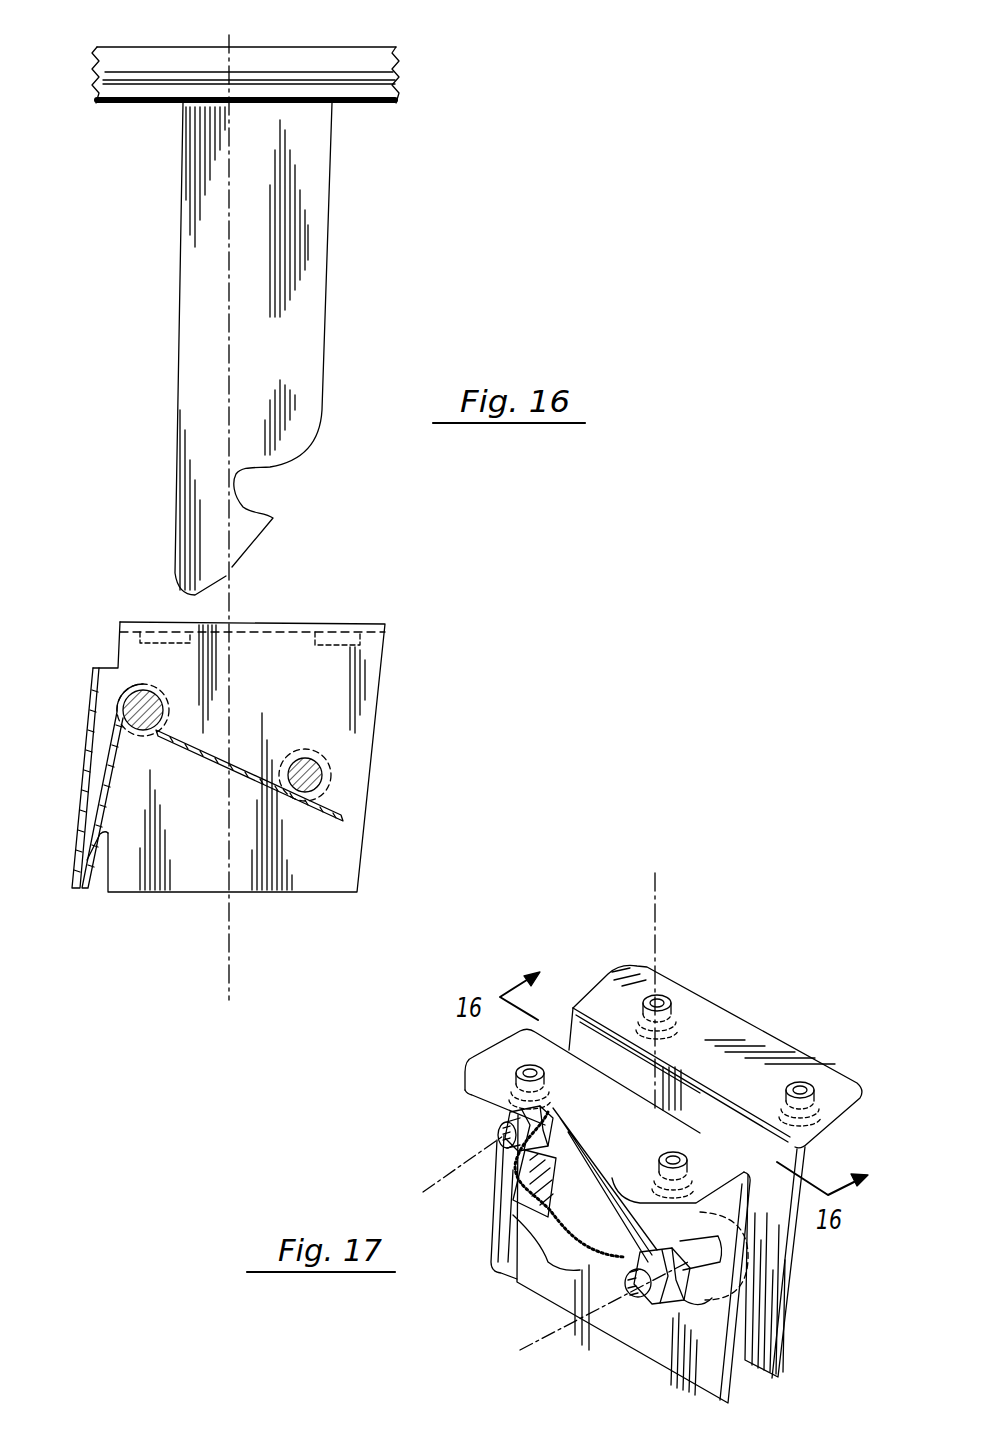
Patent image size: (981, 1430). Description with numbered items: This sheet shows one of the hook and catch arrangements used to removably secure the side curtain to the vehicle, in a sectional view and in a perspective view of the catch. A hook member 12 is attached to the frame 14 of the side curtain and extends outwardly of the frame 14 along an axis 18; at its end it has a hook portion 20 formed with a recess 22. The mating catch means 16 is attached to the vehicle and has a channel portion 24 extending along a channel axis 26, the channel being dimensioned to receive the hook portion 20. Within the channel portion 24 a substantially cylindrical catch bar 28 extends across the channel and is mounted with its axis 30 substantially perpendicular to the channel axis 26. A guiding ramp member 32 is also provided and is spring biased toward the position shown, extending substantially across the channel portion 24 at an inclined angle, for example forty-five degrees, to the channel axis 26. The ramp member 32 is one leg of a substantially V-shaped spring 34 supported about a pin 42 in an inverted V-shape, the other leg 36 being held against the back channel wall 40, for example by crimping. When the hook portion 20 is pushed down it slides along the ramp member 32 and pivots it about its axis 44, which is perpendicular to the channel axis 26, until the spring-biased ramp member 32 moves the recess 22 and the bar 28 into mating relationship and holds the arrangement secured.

In FIG. 16, the hook member 12 is at (370, 213).
In FIG. 16, the frame 14 is at (160, 56).
In FIG. 16, the catch means 16 is at (425, 677).
In FIG. 17, the catch means 16 is at (740, 938).
In FIG. 16, the axis 18 is at (229, 292).
In FIG. 16, the hook portion 20 is at (208, 470).
In FIG. 16, the recess 22 is at (237, 492).
In FIG. 16, the channel portion 24 is at (285, 673).
In FIG. 17, the channel portion 24 is at (706, 1108).
In FIG. 16, the channel axis 26 is at (228, 975).
In FIG. 17, the channel axis 26 is at (653, 912).
In FIG. 16, the catch bar 28 is at (324, 773).
In FIG. 17, the catch bar 28 is at (720, 1287).
In FIG. 17, the axis of catch bar 30 is at (563, 1343).
In FIG. 16, the guiding ramp member 32 is at (245, 763).
In FIG. 17, the guiding ramp member 32 is at (557, 1275).
In FIG. 16, the V-shaped spring 34 is at (100, 737).
In FIG. 16, the other leg 36 is at (100, 773).
In FIG. 17, the other leg 36 is at (513, 1212).
In FIG. 16, the back channel wall 40 is at (77, 877).
In FIG. 16, the pin 42 is at (144, 690).
In FIG. 17, the pin 42 is at (503, 1125).
In FIG. 17, the axis of ramp member 44 is at (445, 1178).